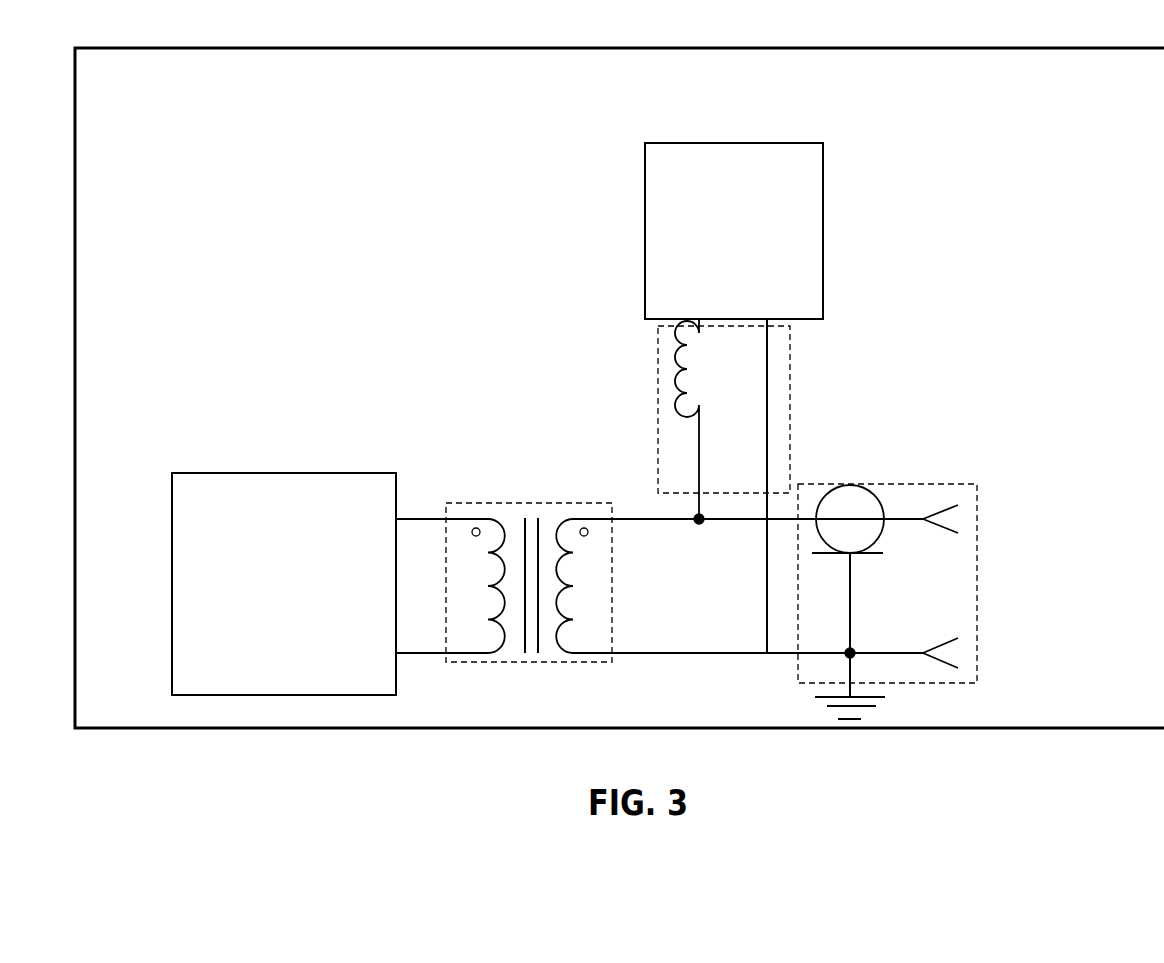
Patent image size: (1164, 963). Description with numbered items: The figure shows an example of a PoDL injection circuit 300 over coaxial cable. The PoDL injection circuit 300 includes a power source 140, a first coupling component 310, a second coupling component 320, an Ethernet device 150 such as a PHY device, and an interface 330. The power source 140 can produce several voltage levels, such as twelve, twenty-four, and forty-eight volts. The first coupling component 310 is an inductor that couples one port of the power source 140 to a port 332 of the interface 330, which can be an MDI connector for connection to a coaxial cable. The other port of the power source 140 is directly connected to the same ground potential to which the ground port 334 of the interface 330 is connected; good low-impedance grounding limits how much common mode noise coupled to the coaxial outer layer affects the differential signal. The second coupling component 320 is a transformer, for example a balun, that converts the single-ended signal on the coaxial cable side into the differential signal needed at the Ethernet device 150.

The PoDL injection circuit 300 is at (152, 101).
The power source 140 is at (664, 137).
The Ethernet device 150 is at (262, 468).
The first coupling component 310 is at (792, 382).
The second coupling component 320 is at (468, 500).
The interface 330 is at (943, 483).
The port 332 is at (725, 533).
The ground port 334 is at (803, 663).